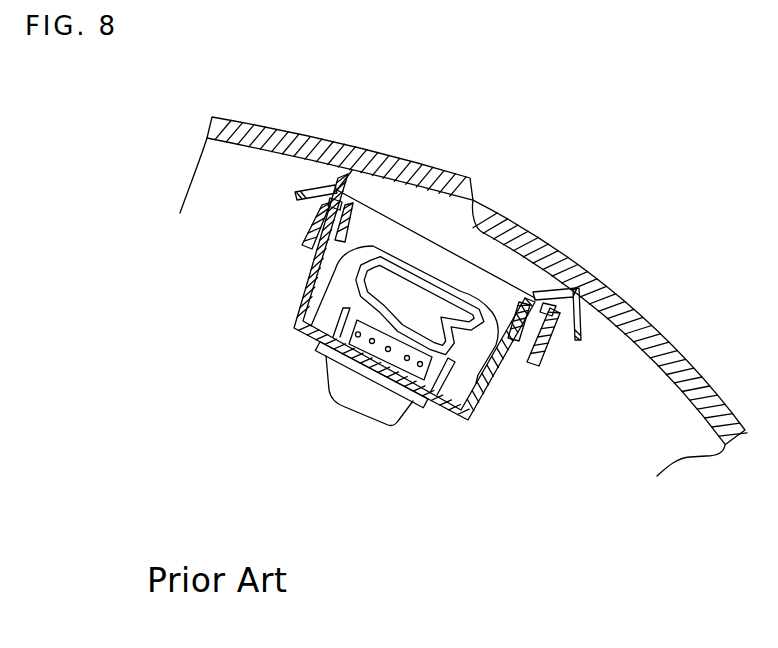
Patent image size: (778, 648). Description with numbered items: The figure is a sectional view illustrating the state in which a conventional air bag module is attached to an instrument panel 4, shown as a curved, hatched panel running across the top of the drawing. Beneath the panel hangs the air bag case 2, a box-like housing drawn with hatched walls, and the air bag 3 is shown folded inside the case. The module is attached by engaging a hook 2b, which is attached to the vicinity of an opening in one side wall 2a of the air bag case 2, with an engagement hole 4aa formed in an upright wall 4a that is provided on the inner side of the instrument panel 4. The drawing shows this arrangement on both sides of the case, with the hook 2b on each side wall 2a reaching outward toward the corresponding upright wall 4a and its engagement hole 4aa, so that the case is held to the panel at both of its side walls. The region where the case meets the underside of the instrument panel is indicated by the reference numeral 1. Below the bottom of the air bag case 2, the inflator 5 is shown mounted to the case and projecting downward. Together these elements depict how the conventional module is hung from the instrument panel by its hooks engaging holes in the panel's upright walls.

The instrument panel / airbag module mounting portion 1 is at (549, 246).
The air bag case 2 is at (297, 351).
The side wall 2a is at (306, 290).
The hook 2b is at (296, 192).
The airbag 3 is at (375, 246).
The instrument panel 4 is at (660, 334).
The upright wall 4a is at (301, 234).
The engagement hole 4aa is at (330, 207).
The inflator 5 is at (360, 397).